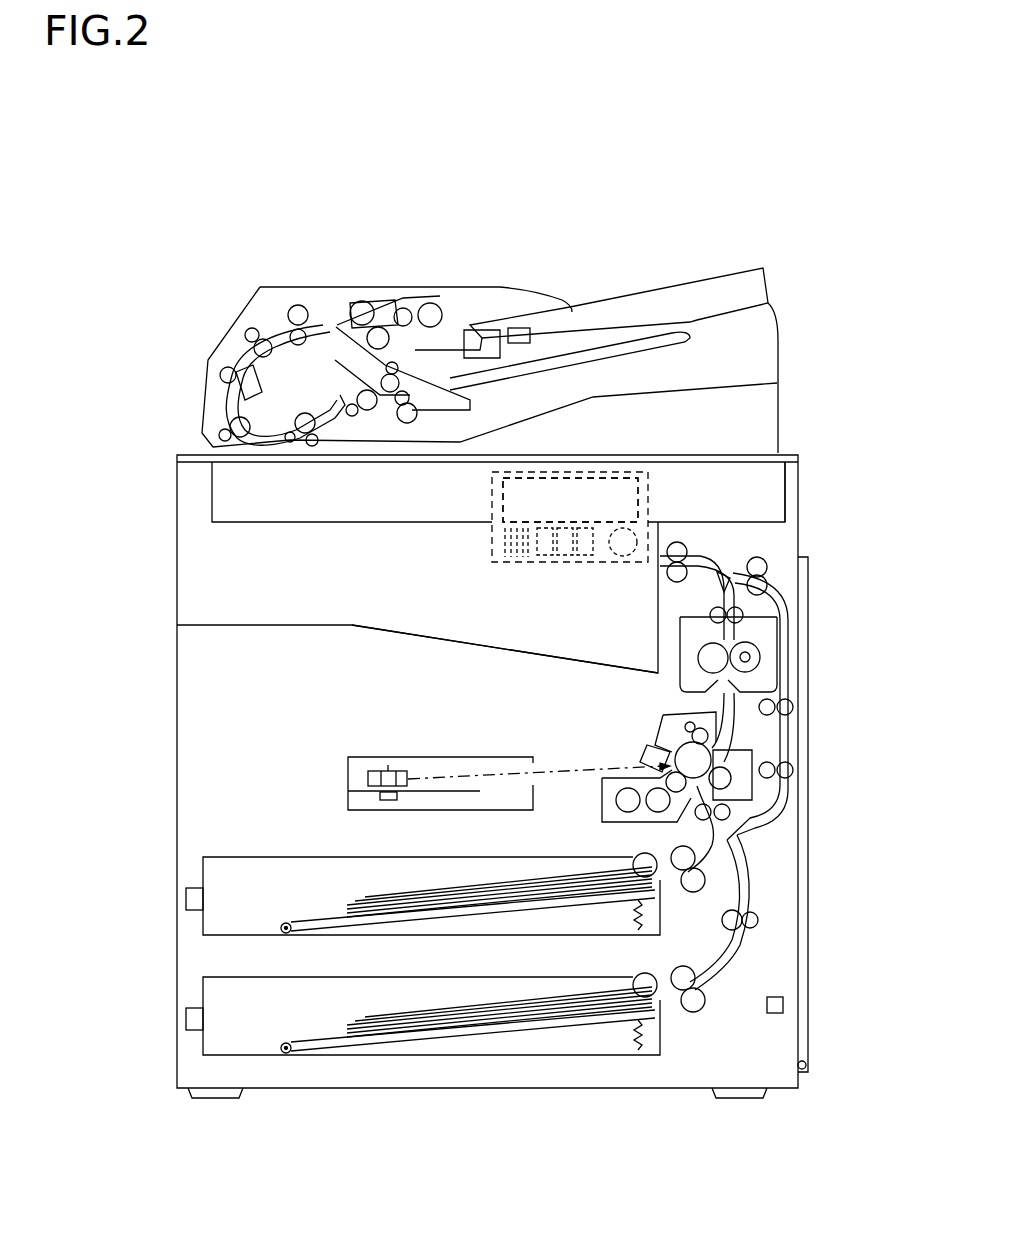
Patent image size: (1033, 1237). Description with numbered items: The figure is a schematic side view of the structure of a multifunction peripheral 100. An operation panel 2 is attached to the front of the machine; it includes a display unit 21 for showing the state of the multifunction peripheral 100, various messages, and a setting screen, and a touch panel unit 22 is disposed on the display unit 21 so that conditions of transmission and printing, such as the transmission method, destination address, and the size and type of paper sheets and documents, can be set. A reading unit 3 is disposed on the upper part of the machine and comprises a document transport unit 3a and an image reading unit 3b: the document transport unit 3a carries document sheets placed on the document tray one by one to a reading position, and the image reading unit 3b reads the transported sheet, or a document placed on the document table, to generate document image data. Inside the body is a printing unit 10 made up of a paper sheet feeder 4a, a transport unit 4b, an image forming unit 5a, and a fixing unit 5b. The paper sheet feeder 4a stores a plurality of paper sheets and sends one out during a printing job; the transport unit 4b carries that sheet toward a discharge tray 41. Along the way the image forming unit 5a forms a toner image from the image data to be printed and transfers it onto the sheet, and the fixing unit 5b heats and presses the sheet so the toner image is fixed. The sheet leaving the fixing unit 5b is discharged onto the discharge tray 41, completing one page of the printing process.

The multifunction peripheral 100 is at (163, 233).
The printing unit 10 is at (876, 562).
The reading unit 3 is at (175, 286).
The document transport unit 3a is at (264, 286).
The image reading unit 3b is at (790, 500).
The operation panel 2 is at (492, 498).
The display unit 21 is at (592, 490).
The touch panel unit 22 is at (570, 500).
The discharge tray 41 is at (540, 655).
The image forming unit 5a is at (545, 727).
The fixing unit 5b is at (675, 613).
The paper sheet feeder 4a is at (200, 975).
The transport unit 4b is at (743, 872).